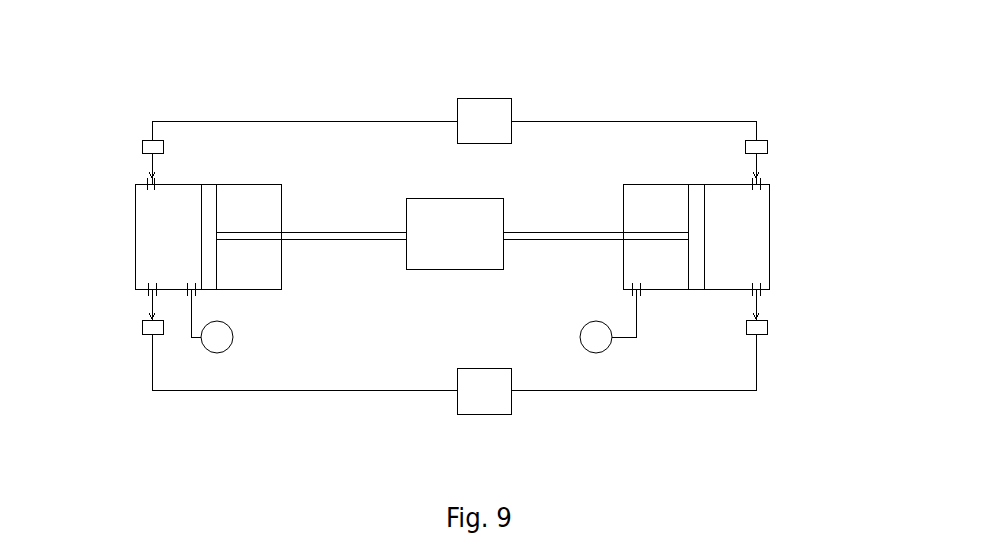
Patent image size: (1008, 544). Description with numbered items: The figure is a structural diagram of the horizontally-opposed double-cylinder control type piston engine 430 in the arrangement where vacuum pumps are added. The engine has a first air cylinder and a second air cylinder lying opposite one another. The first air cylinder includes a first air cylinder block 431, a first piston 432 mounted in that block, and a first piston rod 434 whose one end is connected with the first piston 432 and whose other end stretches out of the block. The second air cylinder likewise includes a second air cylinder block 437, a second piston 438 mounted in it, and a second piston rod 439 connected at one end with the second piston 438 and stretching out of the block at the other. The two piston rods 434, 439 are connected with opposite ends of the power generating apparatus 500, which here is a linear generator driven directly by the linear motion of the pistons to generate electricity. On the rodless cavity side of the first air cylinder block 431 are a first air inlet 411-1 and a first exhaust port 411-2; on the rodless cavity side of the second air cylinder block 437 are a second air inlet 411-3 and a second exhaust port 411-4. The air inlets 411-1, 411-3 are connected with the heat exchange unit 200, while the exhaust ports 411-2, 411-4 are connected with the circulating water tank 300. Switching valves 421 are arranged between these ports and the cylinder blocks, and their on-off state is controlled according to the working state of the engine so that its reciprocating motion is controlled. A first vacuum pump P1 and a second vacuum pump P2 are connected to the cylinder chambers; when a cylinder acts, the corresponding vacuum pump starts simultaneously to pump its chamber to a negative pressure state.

The horizontally-opposed double-cylinder control type piston engine 430 is at (240, 76).
The heat exchange unit 200 is at (474, 128).
The circulating water tank 300 is at (497, 398).
The power generating apparatus 500 is at (459, 240).
The second air cylinder block 437 is at (155, 212).
The second piston 438 is at (210, 255).
The second piston rod 439 is at (359, 238).
The first air cylinder block 431 is at (740, 233).
The first piston 432 is at (694, 253).
The first piston rod 434 is at (612, 233).
The switching valve 421 is at (757, 148).
The first air inlet 411-1 is at (760, 177).
The first exhaust port 411-2 is at (762, 292).
The second air inlet 411-3 is at (150, 178).
The second exhaust port 411-4 is at (148, 296).
The first vacuum pump P1 is at (594, 350).
The second vacuum pump P2 is at (230, 345).